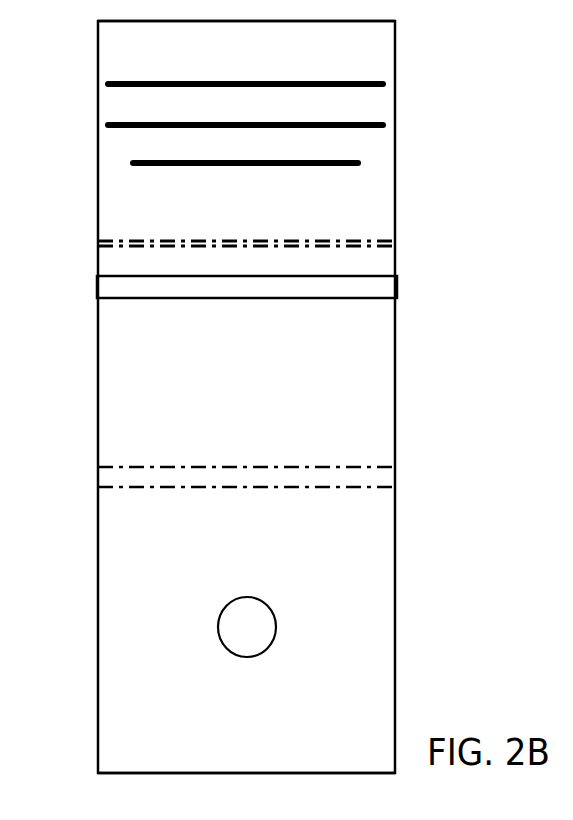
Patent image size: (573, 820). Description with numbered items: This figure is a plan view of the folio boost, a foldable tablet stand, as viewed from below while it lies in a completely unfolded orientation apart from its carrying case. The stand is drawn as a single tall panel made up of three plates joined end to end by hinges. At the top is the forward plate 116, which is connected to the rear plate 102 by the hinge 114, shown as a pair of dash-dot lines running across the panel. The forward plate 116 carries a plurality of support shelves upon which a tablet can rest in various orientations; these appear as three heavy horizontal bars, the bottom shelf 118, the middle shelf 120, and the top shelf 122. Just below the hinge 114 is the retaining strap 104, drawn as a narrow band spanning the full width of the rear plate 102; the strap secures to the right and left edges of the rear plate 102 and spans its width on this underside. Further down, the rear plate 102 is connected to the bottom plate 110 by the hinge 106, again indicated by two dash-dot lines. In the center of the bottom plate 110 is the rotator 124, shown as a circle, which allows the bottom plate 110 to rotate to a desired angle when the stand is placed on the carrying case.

The back plate 102 is at (98, 393).
The retaining strap 104 is at (101, 288).
The hinge 106 is at (101, 478).
The bottom plate 110 is at (98, 628).
The hinge 114 is at (100, 243).
The forward plate 116 is at (98, 60).
The bottom shelf 118 is at (98, 86).
The middle shelf 120 is at (98, 125).
The top shelf 122 is at (133, 163).
The rotator 124 is at (229, 613).